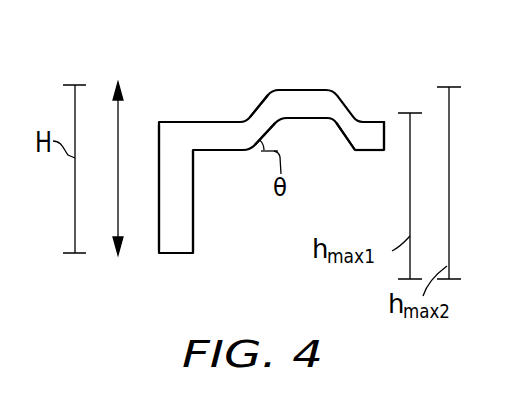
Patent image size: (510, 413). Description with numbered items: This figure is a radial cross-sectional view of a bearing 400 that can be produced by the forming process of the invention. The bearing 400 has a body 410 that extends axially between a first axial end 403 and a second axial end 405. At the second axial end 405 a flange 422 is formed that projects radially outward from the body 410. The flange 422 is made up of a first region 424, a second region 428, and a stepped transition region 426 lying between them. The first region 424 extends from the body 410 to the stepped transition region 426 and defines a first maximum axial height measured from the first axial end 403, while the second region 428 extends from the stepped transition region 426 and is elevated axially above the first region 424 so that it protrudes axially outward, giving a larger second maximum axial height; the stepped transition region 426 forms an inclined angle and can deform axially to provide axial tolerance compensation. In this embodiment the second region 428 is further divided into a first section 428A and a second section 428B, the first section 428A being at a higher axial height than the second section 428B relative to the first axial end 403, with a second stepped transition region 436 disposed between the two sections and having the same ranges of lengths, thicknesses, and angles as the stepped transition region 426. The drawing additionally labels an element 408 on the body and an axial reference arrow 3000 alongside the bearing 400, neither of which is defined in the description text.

The bearing 400 is at (387, 93).
The first axial end 403 is at (184, 256).
The second axial end 405 is at (381, 120).
The inner wall 408 is at (193, 180).
The body 410 is at (193, 215).
The flange 422 is at (213, 121).
The first region 424 is at (193, 121).
The stepped transition region 426 is at (269, 130).
The second region 428 is at (322, 88).
The first section 428A is at (290, 88).
The second section 428B is at (373, 152).
The second stepped transition region 436 is at (345, 136).
The height direction 3000 is at (119, 226).